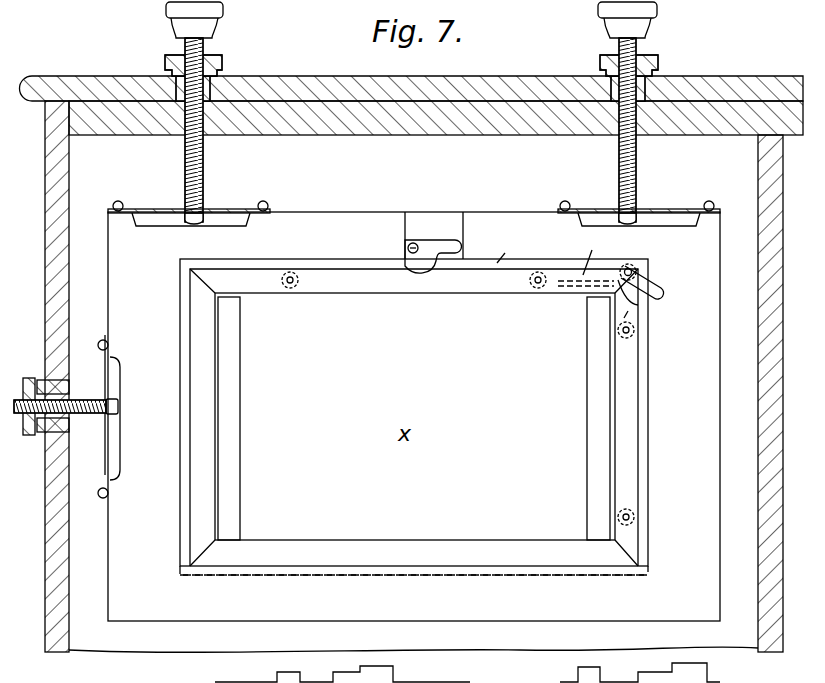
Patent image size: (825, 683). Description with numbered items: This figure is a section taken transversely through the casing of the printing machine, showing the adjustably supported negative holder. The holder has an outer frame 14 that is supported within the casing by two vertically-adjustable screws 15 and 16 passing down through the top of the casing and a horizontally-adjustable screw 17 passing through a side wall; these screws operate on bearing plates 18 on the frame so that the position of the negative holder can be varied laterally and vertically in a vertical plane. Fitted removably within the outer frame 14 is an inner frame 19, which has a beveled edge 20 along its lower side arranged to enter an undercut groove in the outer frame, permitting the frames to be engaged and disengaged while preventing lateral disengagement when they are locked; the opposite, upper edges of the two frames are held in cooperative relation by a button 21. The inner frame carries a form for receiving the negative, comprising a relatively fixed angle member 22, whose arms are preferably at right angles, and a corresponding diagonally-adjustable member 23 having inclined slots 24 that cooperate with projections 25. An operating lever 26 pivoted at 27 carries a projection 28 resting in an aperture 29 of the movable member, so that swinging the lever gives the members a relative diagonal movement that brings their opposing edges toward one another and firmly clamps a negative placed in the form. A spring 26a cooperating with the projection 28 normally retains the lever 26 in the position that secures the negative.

The outer frame 14 is at (414, 416).
The vertically-adjustable screw 15 is at (199, 176).
The vertically-adjustable screw 16 is at (637, 176).
The horizontally-adjustable screw 17 is at (76, 403).
The bearing plate 18 is at (243, 209).
The inner frame 19 is at (513, 250).
The beveled edge 20 is at (385, 576).
The button 21 is at (426, 247).
The angle member 22 is at (198, 505).
The diagonally-adjustable member 23 is at (596, 252).
The inclined slot 24 is at (541, 274).
The projection 25 is at (634, 335).
The operating lever 26 is at (662, 292).
The spring 26a is at (582, 288).
The pivot 27 is at (637, 273).
The projection 28 is at (624, 268).
The aperture 29 is at (639, 306).